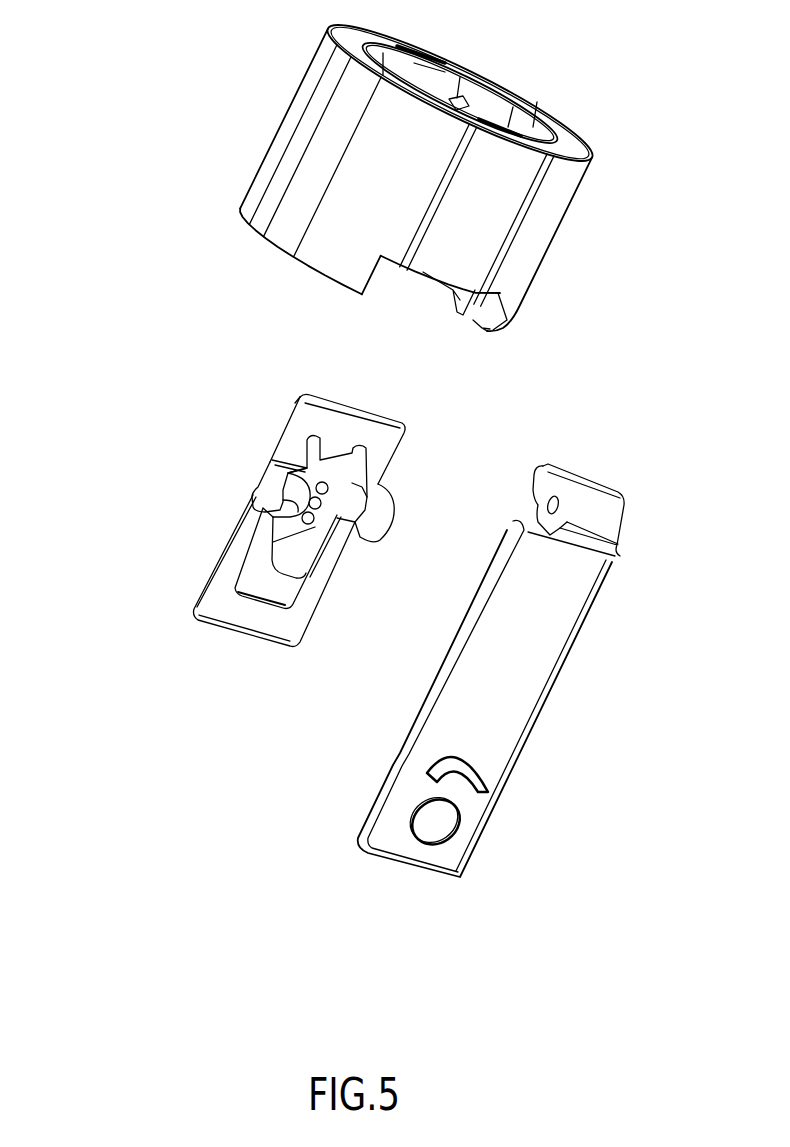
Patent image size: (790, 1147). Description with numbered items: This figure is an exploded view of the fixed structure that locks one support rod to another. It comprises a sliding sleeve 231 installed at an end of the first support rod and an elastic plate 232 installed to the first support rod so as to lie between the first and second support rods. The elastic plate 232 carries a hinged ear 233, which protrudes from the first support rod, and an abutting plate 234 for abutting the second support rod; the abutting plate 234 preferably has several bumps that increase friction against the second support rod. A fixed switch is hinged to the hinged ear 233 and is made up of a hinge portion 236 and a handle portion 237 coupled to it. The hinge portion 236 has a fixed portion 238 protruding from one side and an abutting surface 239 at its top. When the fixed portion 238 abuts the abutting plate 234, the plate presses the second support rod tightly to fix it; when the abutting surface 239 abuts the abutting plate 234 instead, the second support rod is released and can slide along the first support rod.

The sliding sleeve 231 is at (347, 140).
The elastic plate 232 is at (217, 587).
The hinged ear 233 is at (300, 498).
The abutting plate 234 is at (290, 555).
The hinge portion 236 is at (547, 500).
The handle portion 237 is at (560, 628).
The fixed portion 238 is at (540, 468).
The abutting surface 239 is at (588, 482).